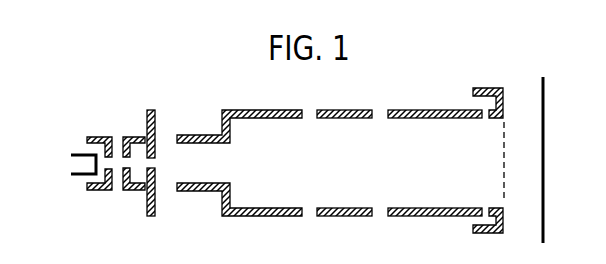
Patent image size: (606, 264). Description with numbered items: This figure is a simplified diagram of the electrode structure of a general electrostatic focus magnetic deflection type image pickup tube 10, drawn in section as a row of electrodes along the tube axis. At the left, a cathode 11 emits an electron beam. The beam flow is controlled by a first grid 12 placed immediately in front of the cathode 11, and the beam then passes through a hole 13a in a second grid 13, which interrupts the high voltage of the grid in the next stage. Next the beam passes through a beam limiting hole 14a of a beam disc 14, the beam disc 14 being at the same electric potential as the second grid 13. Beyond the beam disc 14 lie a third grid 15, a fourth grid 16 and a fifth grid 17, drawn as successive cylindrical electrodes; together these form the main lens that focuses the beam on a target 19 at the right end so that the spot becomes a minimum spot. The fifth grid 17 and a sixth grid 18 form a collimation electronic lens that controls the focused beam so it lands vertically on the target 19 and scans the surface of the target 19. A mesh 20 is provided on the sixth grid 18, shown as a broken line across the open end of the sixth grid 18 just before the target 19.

The image pickup tube 10 is at (203, 93).
The cathode 11 is at (71, 155).
The first grid 12 is at (99, 137).
The second grid 13 is at (133, 137).
The hole 13a is at (125, 166).
The beam disc 14 is at (150, 110).
The beam limiting hole 14a is at (158, 165).
The third grid 15 is at (265, 110).
The fourth grid 16 is at (349, 110).
The fifth grid 17 is at (428, 110).
The sixth grid 18 is at (490, 88).
The target 19 is at (545, 97).
The mesh 20 is at (506, 163).